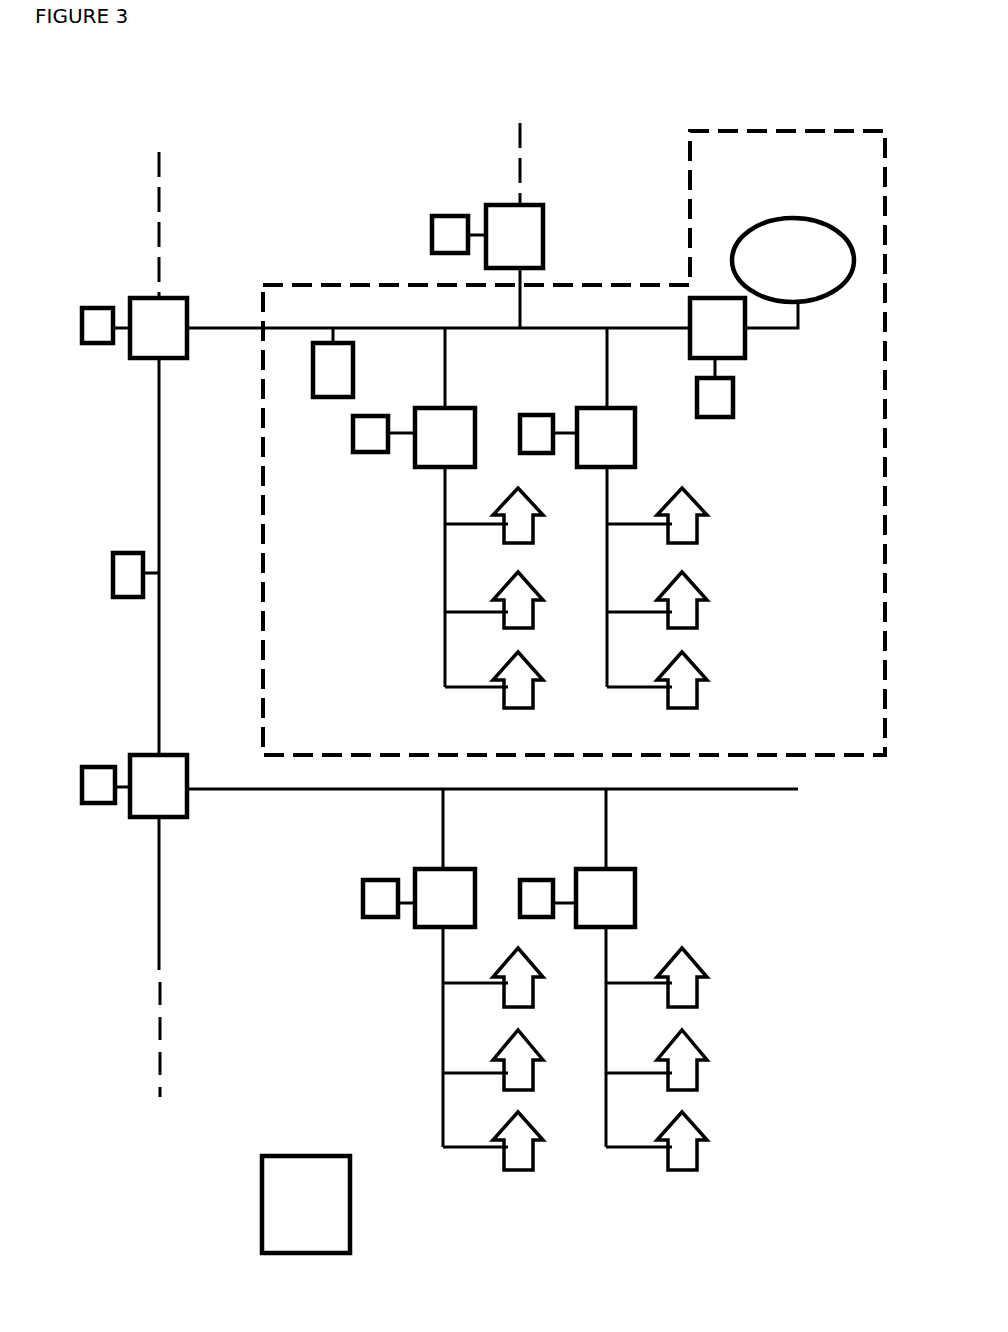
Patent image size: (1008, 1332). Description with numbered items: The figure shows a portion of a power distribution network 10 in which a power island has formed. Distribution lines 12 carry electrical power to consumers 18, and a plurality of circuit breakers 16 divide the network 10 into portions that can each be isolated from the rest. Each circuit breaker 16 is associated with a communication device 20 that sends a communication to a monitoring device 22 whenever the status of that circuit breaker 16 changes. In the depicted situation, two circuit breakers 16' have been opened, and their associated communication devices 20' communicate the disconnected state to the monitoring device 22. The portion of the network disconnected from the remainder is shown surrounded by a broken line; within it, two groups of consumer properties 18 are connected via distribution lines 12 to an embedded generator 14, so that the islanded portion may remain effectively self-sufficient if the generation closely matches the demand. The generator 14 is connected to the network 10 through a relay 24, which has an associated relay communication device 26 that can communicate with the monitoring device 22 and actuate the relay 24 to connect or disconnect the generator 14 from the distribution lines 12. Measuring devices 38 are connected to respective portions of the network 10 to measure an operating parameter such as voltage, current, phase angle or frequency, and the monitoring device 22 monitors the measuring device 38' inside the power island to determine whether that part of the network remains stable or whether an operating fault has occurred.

The power distribution network 10 is at (574, 405).
The distribution lines 12 is at (290, 327).
The embedded generator 14 is at (820, 220).
The circuit breaker 16 is at (398, 644).
The disconnected circuit breaker 16' is at (371, 258).
The consumers 18 is at (597, 829).
The communication device 20 is at (329, 665).
The communication device 20' is at (281, 272).
The monitoring device 22 is at (306, 1190).
The relay 24 is at (733, 328).
The relay communication device 26 is at (731, 398).
The measuring device 38 is at (121, 575).
The measuring device 38' is at (314, 362).